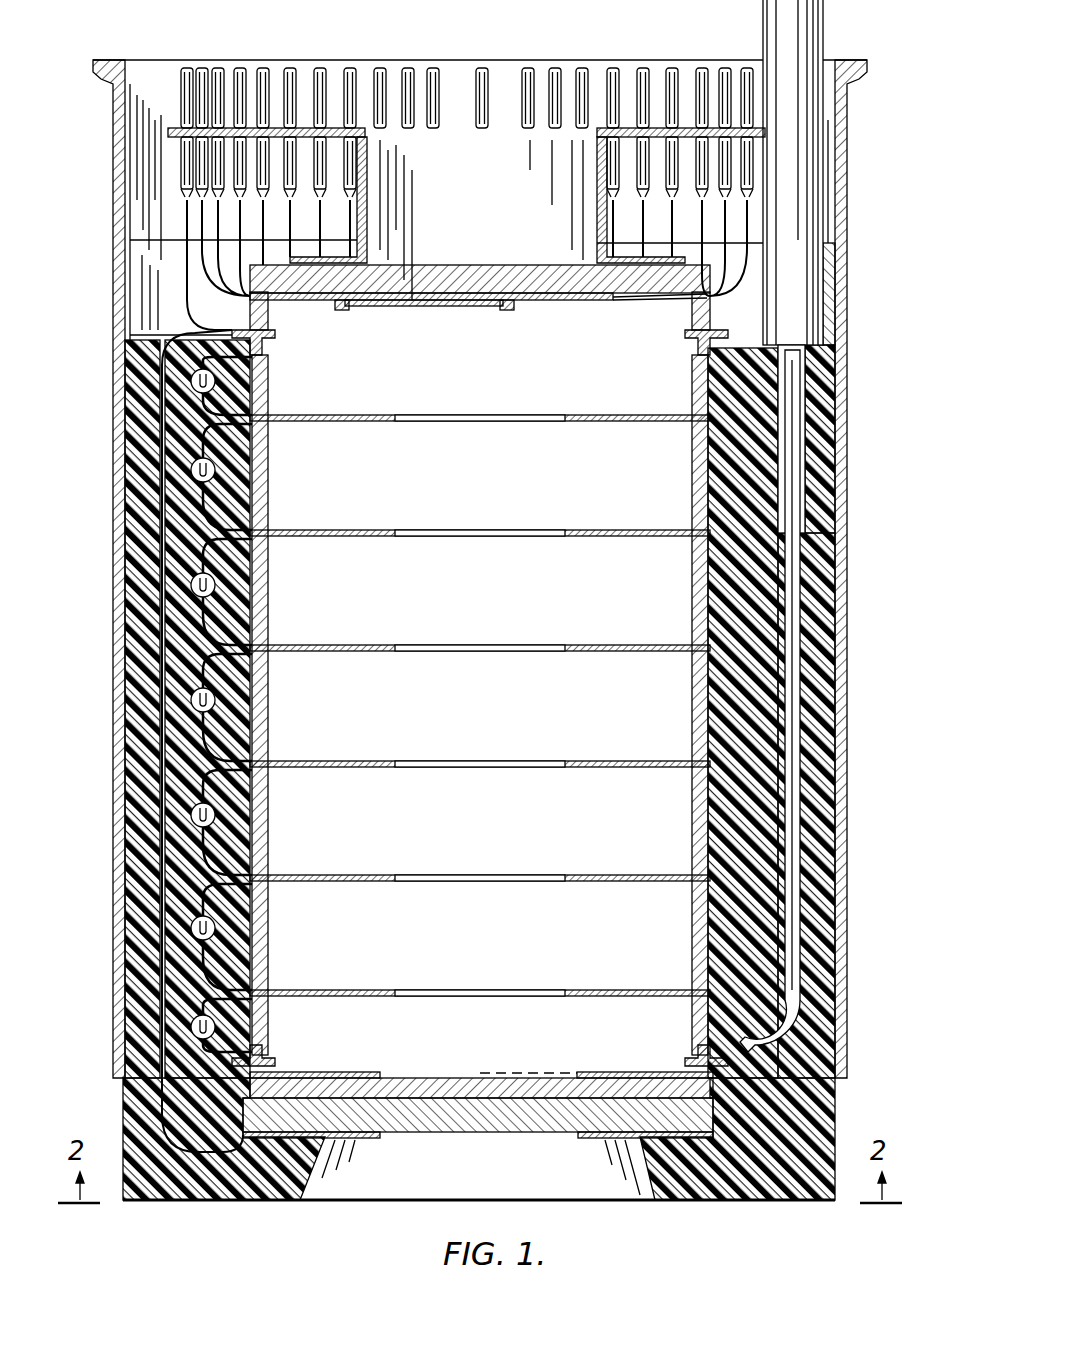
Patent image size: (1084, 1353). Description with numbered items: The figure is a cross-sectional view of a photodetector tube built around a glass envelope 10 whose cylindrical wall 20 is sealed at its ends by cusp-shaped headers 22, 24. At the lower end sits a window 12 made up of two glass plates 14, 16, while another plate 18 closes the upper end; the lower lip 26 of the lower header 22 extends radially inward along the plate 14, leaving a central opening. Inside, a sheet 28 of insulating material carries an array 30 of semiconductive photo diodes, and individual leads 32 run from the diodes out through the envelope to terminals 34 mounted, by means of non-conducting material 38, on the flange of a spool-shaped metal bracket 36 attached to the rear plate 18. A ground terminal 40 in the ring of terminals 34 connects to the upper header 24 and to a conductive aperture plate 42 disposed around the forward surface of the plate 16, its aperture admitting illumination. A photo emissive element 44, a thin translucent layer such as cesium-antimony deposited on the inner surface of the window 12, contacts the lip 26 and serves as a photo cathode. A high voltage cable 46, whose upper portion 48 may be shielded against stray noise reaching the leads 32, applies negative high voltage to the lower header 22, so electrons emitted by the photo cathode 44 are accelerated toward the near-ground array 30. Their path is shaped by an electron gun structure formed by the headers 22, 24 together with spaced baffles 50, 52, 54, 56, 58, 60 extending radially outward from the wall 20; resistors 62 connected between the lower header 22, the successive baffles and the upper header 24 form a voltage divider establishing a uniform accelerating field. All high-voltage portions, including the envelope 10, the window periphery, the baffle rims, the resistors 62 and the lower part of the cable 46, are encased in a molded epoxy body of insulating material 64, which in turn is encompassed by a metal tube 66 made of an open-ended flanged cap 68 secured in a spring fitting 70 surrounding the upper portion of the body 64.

The envelope 10 is at (703, 506).
The window 12 is at (402, 1074).
The glass plate 14 is at (437, 1077).
The glass plate 16 is at (431, 1138).
The plate 18 is at (455, 266).
The cylindrical wall 20 is at (265, 400).
The lower header 22 is at (270, 1058).
The upper header 24 is at (272, 336).
The lower lip 26 is at (327, 1072).
The sheet of insulating material 28 is at (592, 301).
The array of semiconductive photo diodes 30 is at (484, 307).
The leads 32 is at (347, 311).
The terminals 34 is at (290, 66).
The metal bracket 36 is at (368, 198).
The non-conducting material 38 is at (466, 127).
The ground terminal 40 is at (190, 66).
The aperture plate 42 is at (358, 1139).
The photo emissive element 44 is at (520, 1072).
The high voltage cable 46 is at (802, 614).
The upper portion of the cable 48 is at (812, 54).
The baffle 50 is at (345, 990).
The baffle 52 is at (345, 875).
The baffle 54 is at (345, 761).
The baffle 56 is at (343, 645).
The baffle 58 is at (343, 530).
The baffle 60 is at (345, 415).
The resistors 62 is at (210, 381).
The body of insulating material 64 is at (837, 1118).
The metal tube 66 is at (843, 758).
The flanged cap 68 is at (843, 207).
The spring fitting 70 is at (838, 345).